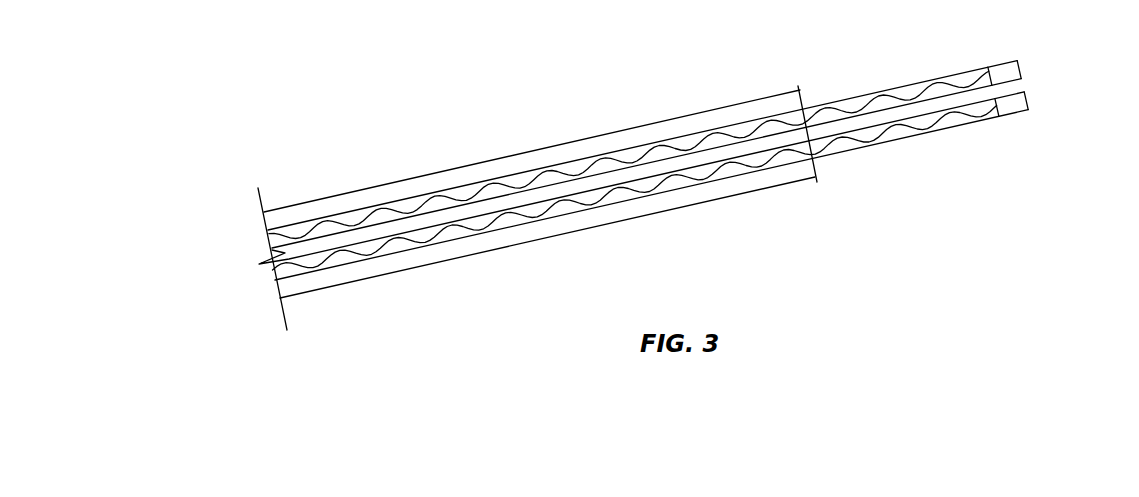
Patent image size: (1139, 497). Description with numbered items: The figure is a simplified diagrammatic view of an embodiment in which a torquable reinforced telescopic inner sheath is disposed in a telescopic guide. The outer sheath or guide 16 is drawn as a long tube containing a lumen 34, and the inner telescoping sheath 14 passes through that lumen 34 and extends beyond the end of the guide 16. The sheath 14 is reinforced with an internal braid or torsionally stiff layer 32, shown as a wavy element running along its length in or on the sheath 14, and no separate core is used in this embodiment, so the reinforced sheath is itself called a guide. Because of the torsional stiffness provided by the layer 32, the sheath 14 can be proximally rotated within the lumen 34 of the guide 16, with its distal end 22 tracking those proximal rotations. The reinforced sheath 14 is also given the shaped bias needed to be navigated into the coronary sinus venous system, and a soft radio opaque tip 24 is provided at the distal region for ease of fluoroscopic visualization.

The guide 16 is at (548, 147).
The lumen 34 is at (805, 93).
The sheath 14 is at (877, 92).
The torsionally stiff layer 32 is at (937, 81).
The distal end 22 is at (1022, 70).
The soft radio opaque tip 24 is at (1025, 104).